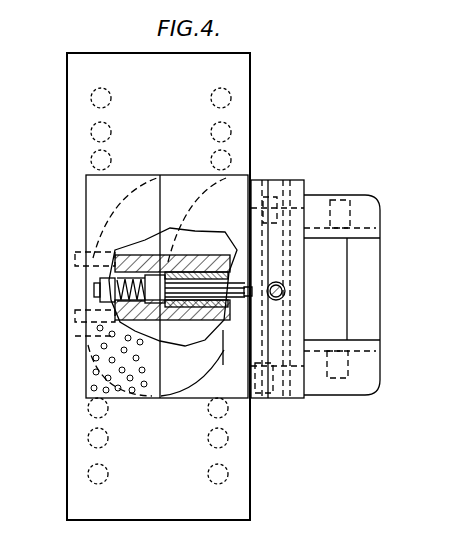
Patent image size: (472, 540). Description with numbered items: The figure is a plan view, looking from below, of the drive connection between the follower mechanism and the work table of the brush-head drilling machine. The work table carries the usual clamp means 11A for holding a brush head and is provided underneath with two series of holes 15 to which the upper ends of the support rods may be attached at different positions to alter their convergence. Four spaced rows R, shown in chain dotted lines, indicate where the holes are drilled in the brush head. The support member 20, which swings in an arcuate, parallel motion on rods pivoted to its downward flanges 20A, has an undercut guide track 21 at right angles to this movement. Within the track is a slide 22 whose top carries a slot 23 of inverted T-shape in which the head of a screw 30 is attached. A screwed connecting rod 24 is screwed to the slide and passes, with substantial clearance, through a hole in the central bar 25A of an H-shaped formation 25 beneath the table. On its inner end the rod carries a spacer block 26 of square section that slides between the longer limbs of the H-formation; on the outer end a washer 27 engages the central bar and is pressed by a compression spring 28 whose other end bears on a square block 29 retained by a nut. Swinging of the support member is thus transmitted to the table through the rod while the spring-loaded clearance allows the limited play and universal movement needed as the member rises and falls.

The clamp means 11A is at (144, 286).
The holes 15 is at (208, 474).
The rows R is at (88, 380).
The support member 20 is at (378, 312).
The downward flanges 20A is at (320, 200).
The undercut guide track 21 is at (362, 238).
The slide 22 is at (335, 334).
The slot 23 is at (276, 398).
The screwed connecting rod 24 is at (205, 296).
The H-shaped formation 25 is at (218, 264).
The central bar 25A is at (180, 252).
The spacer block 26 is at (163, 320).
The washer 27 is at (150, 272).
The compression spring 28 is at (116, 262).
The square block 29 is at (117, 294).
The screw 30 is at (281, 287).